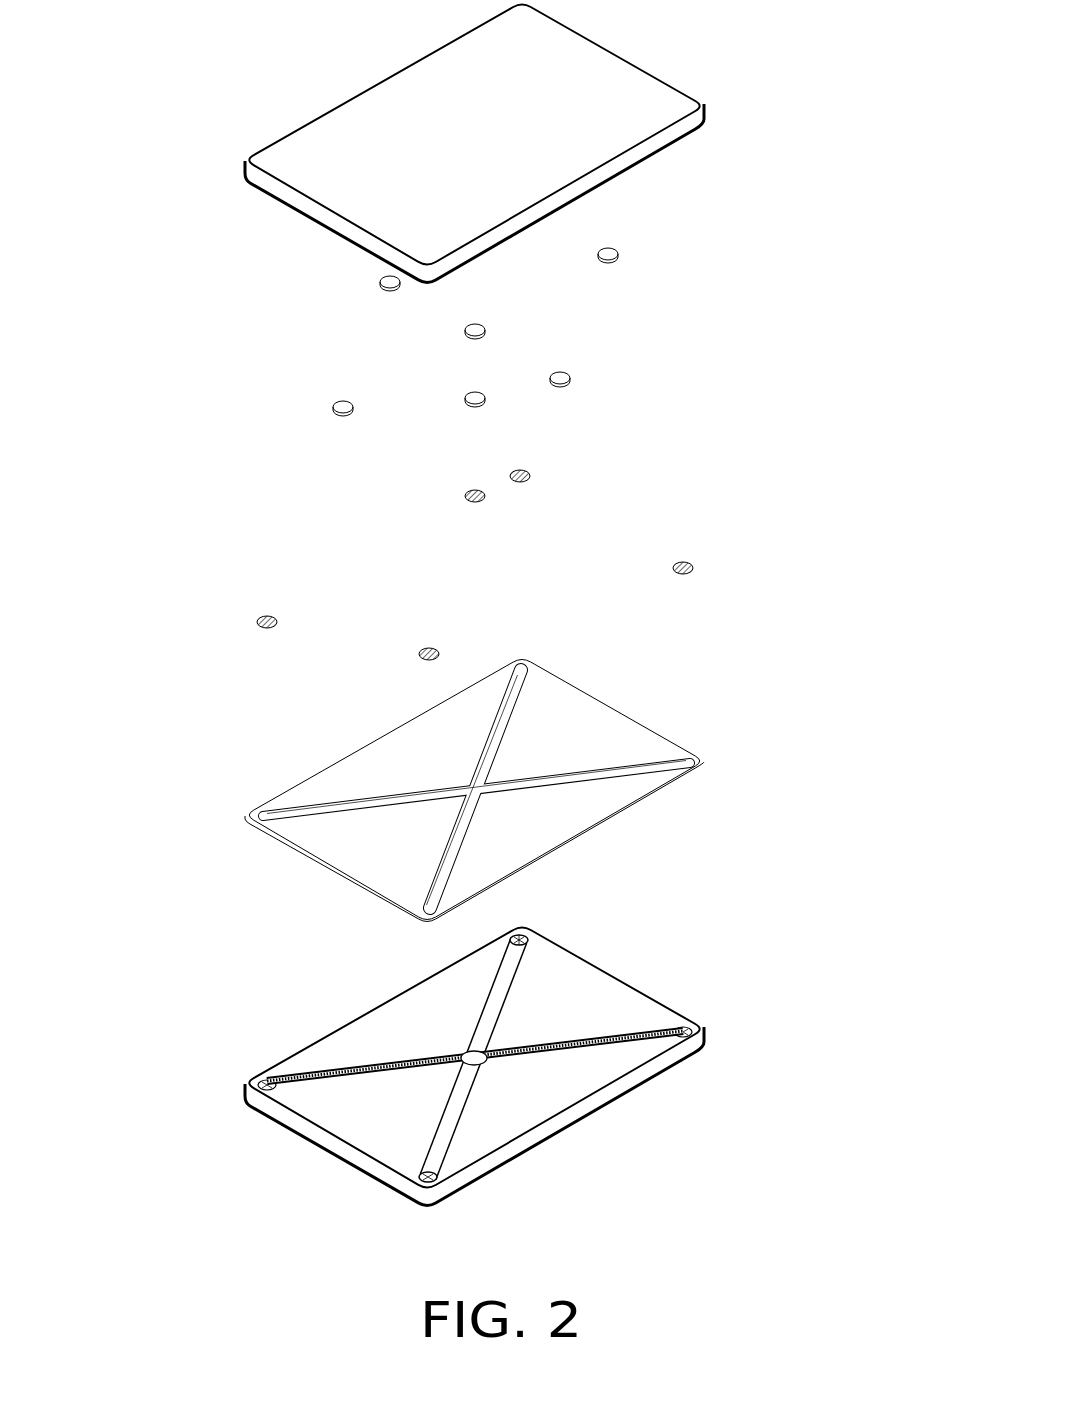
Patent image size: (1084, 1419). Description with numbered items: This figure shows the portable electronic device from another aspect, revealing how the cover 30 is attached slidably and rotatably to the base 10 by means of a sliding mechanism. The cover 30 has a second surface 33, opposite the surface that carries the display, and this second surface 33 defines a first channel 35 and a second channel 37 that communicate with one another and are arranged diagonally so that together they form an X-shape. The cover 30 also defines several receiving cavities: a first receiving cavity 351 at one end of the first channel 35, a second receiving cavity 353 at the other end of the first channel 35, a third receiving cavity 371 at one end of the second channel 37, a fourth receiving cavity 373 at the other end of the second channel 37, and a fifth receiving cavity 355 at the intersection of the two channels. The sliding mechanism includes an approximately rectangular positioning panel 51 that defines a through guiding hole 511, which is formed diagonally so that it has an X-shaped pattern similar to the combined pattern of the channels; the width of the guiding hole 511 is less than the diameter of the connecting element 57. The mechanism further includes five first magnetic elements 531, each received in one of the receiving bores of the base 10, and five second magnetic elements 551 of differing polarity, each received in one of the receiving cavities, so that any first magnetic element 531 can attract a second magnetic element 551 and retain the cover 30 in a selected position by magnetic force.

The base 10 is at (335, 92).
The cover 30 is at (476, 1051).
The second surface 33 is at (341, 1041).
The first channel 35 is at (492, 1007).
The first receiving cavity 351 is at (423, 1180).
The second receiving cavity 353 is at (522, 930).
The fifth receiving cavity 355 is at (471, 1053).
The second channel 37 is at (610, 1040).
The third receiving cavity 371 is at (687, 1030).
The fourth receiving cavity 373 is at (263, 1082).
The positioning panel 51 is at (516, 784).
The guiding hole 511 is at (525, 789).
The first magnetic elements 531 is at (684, 563).
The second magnetic elements 551 is at (608, 250).
The connecting element 57 is at (479, 396).